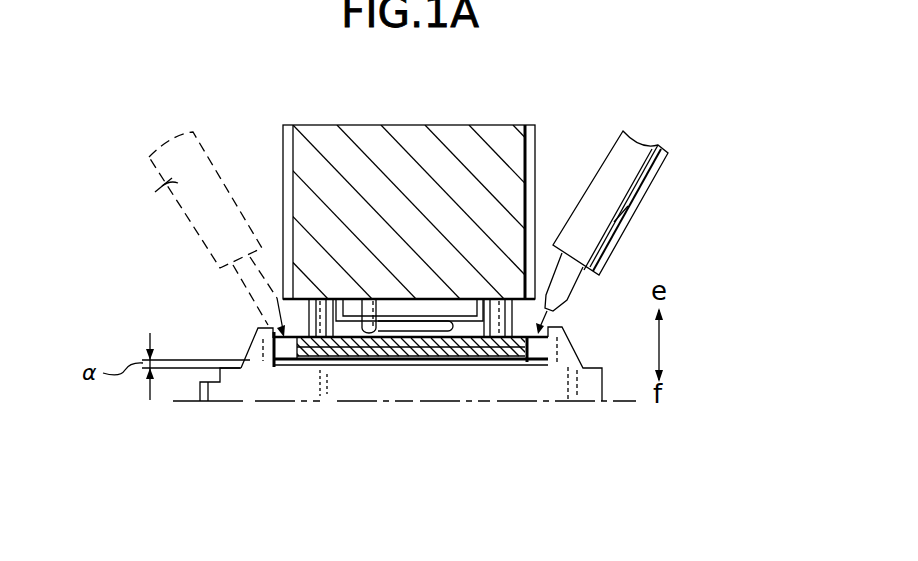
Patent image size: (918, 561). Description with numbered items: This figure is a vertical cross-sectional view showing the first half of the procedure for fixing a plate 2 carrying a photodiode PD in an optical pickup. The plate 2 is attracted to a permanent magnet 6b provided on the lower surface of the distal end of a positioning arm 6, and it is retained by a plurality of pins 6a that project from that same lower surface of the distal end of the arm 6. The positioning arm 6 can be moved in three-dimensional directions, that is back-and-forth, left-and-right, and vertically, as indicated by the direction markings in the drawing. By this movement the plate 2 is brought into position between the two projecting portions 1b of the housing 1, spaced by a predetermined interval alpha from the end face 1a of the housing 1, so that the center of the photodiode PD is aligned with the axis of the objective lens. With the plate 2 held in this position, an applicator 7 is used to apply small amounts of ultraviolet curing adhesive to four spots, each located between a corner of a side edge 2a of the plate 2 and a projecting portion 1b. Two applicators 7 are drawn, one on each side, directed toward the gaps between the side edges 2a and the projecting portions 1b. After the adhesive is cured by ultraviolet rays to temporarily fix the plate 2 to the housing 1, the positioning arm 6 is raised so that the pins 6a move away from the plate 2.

The housing 1 is at (258, 395).
The end face 1a is at (427, 360).
The projecting portions 1b is at (249, 347).
The plate 2 is at (388, 377).
The side edge 2a is at (297, 366).
The positioning arm 6 is at (352, 152).
The pins 6a is at (370, 299).
The permanent magnet 6b is at (445, 312).
The applicator 7 is at (162, 187).
The photodiode PD is at (460, 358).